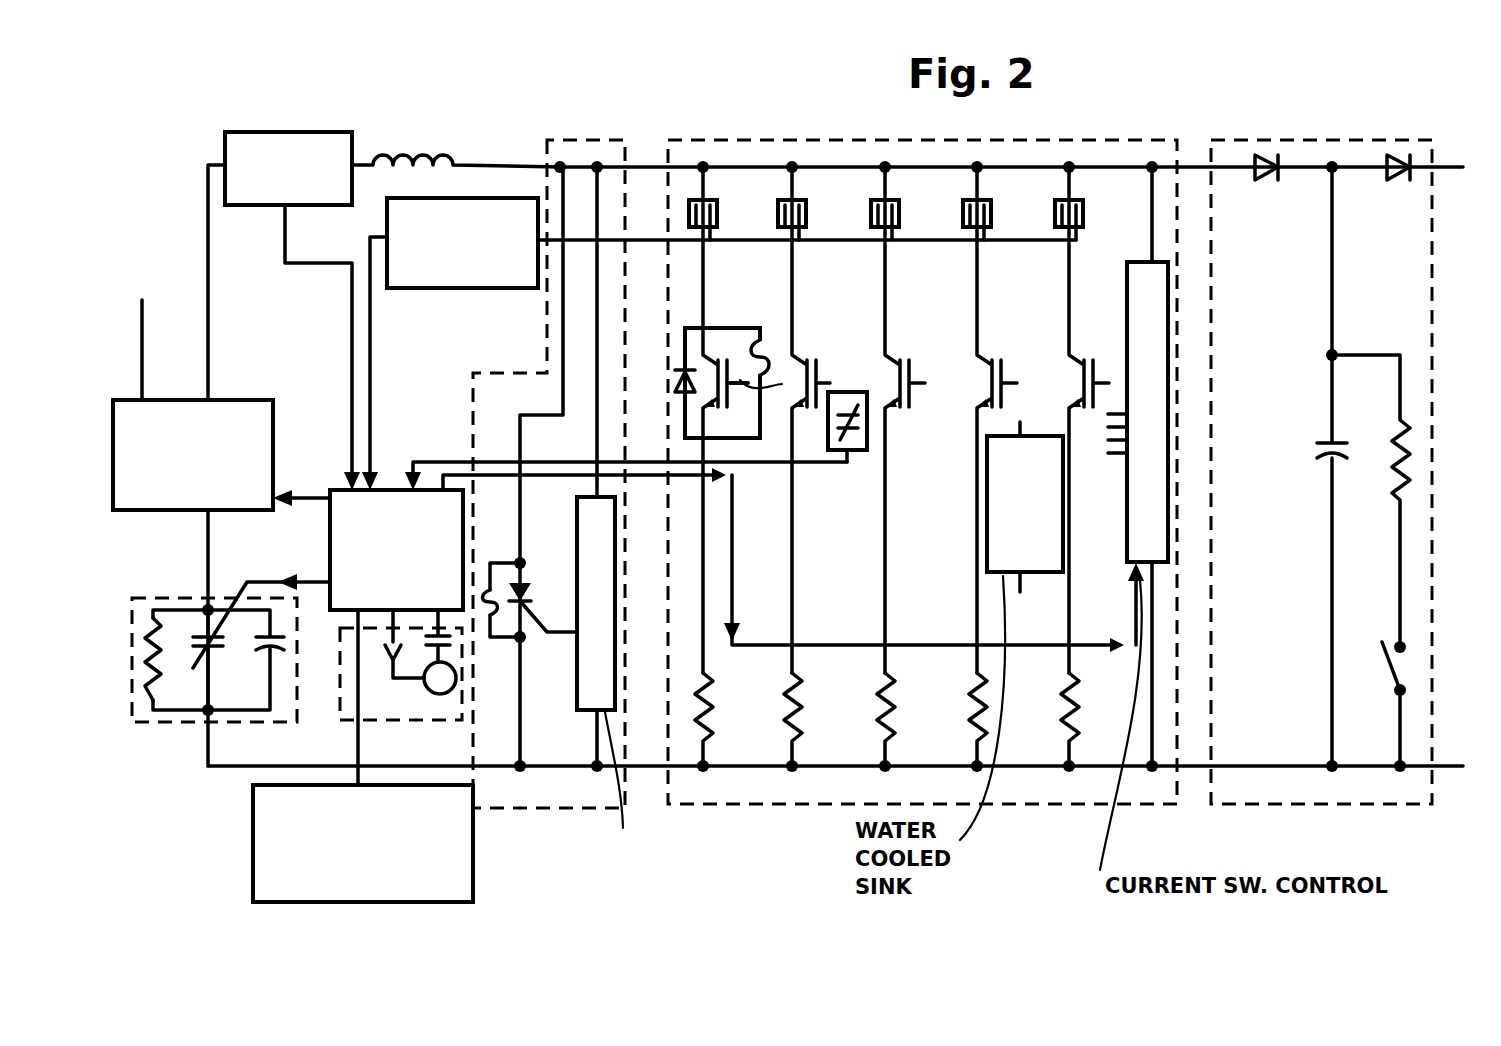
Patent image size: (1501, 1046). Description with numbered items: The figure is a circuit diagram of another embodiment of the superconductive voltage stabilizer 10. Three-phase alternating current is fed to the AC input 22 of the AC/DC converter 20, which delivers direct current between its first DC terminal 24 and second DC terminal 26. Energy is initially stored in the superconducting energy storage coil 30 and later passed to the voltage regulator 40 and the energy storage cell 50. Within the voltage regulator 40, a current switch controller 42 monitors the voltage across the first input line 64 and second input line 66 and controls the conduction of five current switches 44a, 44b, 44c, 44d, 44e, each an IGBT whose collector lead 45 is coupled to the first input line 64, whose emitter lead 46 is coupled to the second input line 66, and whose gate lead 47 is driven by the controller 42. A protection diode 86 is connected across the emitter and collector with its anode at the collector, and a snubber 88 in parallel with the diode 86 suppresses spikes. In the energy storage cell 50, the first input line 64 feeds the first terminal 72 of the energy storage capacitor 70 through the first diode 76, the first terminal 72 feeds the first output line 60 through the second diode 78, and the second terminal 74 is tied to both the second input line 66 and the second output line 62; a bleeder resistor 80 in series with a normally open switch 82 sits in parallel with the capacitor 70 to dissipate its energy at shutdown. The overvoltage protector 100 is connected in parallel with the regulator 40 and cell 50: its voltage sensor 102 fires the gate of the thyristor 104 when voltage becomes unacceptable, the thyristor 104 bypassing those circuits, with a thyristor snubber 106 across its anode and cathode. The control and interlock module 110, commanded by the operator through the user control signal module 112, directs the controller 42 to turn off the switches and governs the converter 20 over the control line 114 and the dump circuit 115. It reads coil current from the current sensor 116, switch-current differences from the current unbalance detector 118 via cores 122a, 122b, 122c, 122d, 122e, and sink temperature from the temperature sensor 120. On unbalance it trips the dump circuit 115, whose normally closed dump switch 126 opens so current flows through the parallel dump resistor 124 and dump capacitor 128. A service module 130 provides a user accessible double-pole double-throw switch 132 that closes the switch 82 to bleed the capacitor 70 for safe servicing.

The superconductive voltage stabilizer 10 is at (1032, 812).
The AC/DC converter 20 is at (180, 498).
The AC input 22 is at (142, 356).
The first DC terminal 24 is at (215, 392).
The second DC terminal 26 is at (215, 520).
The superconducting energy storage coil 30 is at (410, 158).
The voltage regulator 40 is at (728, 138).
The current switch controller 42 is at (1127, 540).
The current switch 44a is at (718, 358).
The current switch 44b is at (807, 358).
The current switch 44c is at (900, 358).
The current switch 44d is at (991, 358).
The current switch 44e is at (1084, 358).
The collector lead 45 is at (688, 330).
The emitter lead 46 is at (690, 428).
The gate lead 47 is at (763, 382).
The energy storage cell 50 is at (1300, 137).
The first output line 60 is at (1455, 165).
The second output line 62 is at (1447, 772).
The first input line 64 is at (1195, 165).
The second input line 66 is at (1192, 772).
The energy storage capacitor 70 is at (1322, 440).
The first terminal 72 is at (1334, 292).
The second terminal 74 is at (1330, 545).
The first diode 76 is at (1268, 182).
The second diode 78 is at (1396, 182).
The resistor 80 is at (1395, 432).
The switch 82 is at (1390, 665).
The protection diode 86 is at (674, 382).
The snubber 88 is at (765, 340).
The overvoltage protector 100 is at (551, 816).
The voltage sensor 102 is at (580, 711).
The thyristor 104 is at (540, 580).
The thyristor snubber 106 is at (584, 498).
The control and interlock module 110 is at (392, 478).
The user control signal module 112 is at (253, 840).
The control line 114 is at (304, 498).
The dump circuit 115 is at (188, 732).
The current sensor 116 is at (310, 132).
The current unbalance detector 118 is at (438, 288).
The temperature sensor 120 is at (852, 455).
The core 122a is at (712, 200).
The core 122b is at (801, 200).
The core 122c is at (894, 200).
The core 122d is at (986, 200).
The core 122e is at (1078, 228).
The dump resistor 124 is at (172, 612).
The dump switch 126 is at (215, 655).
The dump capacitor 128 is at (272, 665).
The service module 130 is at (390, 722).
The double-pole double-throw switch 132 is at (456, 678).